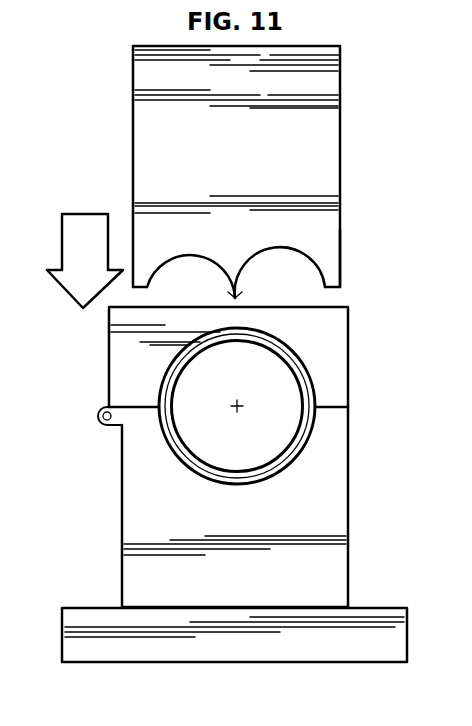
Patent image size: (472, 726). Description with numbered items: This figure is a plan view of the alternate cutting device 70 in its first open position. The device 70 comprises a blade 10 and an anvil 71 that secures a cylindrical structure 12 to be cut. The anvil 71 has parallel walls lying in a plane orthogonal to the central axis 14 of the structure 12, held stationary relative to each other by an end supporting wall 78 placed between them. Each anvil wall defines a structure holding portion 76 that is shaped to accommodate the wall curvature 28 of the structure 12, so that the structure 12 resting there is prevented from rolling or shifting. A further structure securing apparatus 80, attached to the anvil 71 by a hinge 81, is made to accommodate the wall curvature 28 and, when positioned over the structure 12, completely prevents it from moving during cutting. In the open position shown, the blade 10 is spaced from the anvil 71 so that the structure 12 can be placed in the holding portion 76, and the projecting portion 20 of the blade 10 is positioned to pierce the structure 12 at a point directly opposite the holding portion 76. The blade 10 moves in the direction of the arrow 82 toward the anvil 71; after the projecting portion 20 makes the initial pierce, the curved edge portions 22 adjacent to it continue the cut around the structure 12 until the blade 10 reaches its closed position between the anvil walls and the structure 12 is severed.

The blade 10 is at (341, 260).
The structure 12 is at (188, 446).
The central axis 14 is at (235, 406).
The projecting portion 20 is at (236, 272).
The curved edge portions 22 is at (186, 252).
The wall curvature 28 is at (312, 374).
The device 70 is at (255, 166).
The anvil 71 is at (235, 516).
The structure holding portion 76 is at (188, 470).
The end supporting wall 78 is at (234, 635).
The structure securing apparatus 80 is at (228, 457).
The hinge 81 is at (103, 426).
The arrow 82 is at (85, 261).